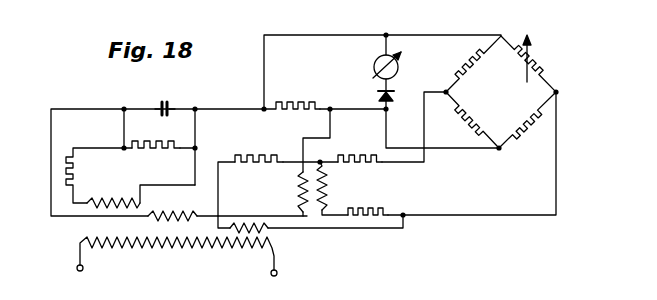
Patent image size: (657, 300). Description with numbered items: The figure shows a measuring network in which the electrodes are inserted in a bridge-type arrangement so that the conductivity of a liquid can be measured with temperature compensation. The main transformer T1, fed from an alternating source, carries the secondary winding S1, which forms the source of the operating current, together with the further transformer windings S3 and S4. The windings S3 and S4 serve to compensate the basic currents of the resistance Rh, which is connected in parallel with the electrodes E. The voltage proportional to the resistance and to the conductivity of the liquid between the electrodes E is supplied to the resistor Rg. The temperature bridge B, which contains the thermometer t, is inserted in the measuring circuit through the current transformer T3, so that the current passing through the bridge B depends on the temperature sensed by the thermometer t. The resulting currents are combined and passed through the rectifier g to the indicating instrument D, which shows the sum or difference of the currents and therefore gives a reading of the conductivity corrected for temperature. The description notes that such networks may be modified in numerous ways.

The electrodes E is at (165, 98).
The resistance Rh is at (156, 135).
The transformer winding S3 is at (103, 178).
The secondary winding S1 is at (172, 207).
The main transformer T1 is at (92, 227).
The resistor Rg is at (292, 98).
The instrument D is at (374, 57).
The rectifier g is at (376, 93).
The temperature bridge B is at (501, 92).
The thermometer t is at (531, 58).
The current transformer T3 is at (311, 185).
The transformer winding S4 is at (249, 214).